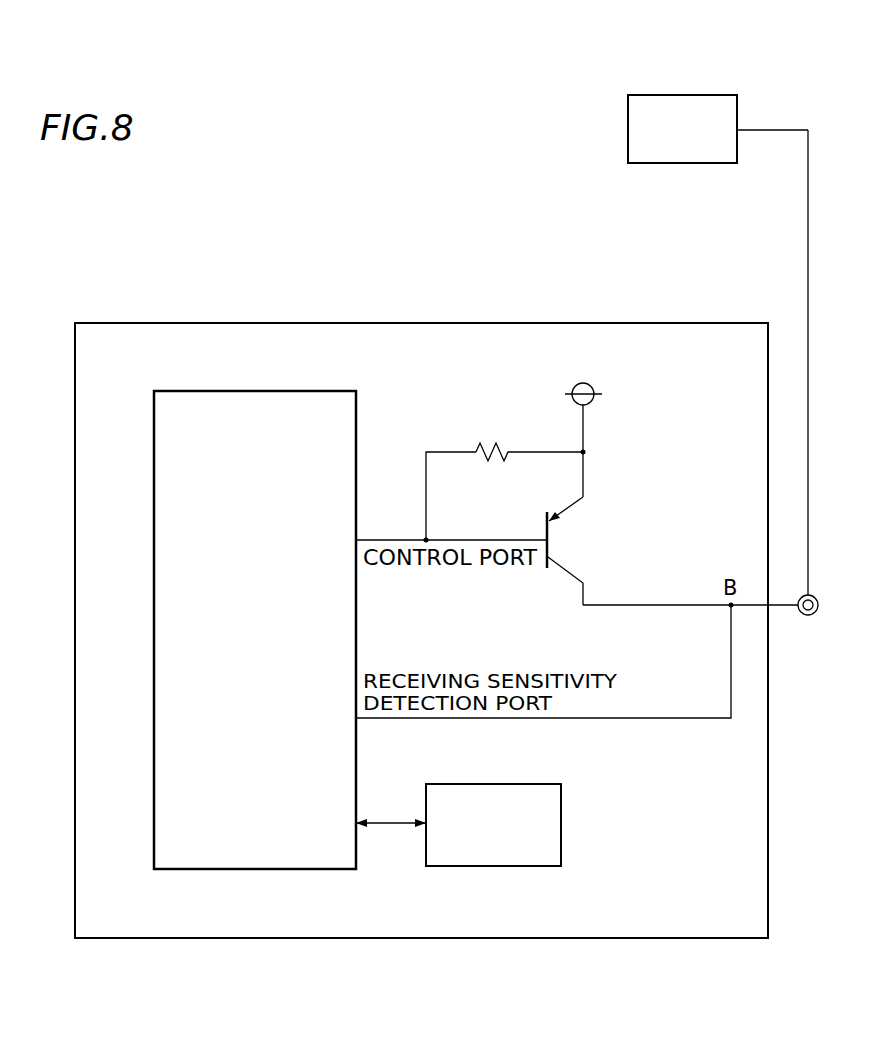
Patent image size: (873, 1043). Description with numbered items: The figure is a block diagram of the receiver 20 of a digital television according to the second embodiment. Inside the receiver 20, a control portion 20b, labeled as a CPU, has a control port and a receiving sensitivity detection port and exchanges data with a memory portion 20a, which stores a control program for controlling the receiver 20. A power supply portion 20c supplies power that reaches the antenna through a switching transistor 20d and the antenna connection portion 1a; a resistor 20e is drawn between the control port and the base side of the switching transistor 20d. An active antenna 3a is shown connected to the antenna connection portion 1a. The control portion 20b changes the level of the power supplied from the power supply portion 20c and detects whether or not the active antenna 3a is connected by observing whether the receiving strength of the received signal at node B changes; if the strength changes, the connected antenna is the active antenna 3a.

The active antenna 3a is at (715, 93).
The receiver 20 is at (403, 323).
The memory portion 20a is at (493, 866).
The control portion 20b is at (270, 869).
The power supply portion 20c is at (583, 383).
The switching transistor 20d is at (583, 540).
The resistor 20e is at (490, 443).
The antenna connection portion 1a is at (808, 615).